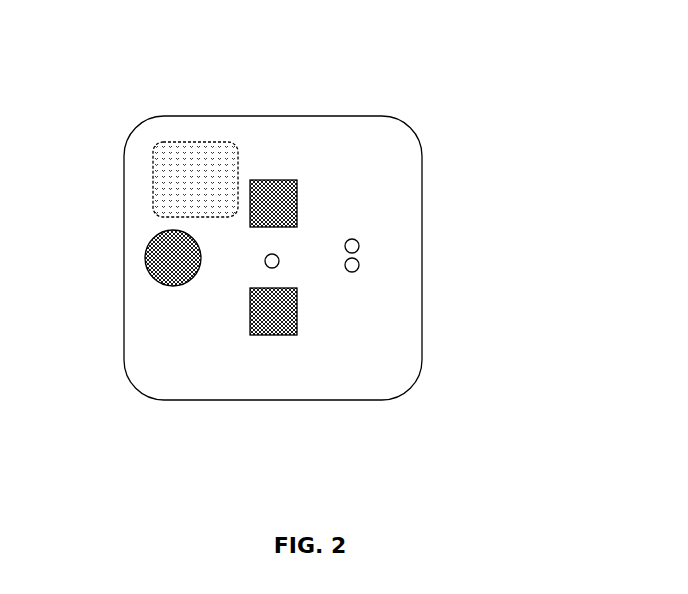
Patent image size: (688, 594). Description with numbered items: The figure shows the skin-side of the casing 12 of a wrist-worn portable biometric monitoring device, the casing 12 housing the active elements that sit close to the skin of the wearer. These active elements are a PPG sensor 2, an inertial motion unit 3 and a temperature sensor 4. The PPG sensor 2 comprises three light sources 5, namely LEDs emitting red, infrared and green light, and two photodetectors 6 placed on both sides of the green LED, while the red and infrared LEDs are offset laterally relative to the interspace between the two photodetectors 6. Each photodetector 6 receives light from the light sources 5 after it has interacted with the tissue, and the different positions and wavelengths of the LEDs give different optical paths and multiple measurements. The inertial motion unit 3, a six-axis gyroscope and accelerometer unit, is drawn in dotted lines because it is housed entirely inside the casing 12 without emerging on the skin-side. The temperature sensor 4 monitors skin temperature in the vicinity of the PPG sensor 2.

The PPG sensor 2 is at (364, 387).
The inertial motion unit 3 is at (156, 148).
The temperature sensor 4 is at (144, 275).
The light sources 5 is at (357, 241).
The photodetectors 6 is at (272, 180).
The casing 12 is at (455, 113).